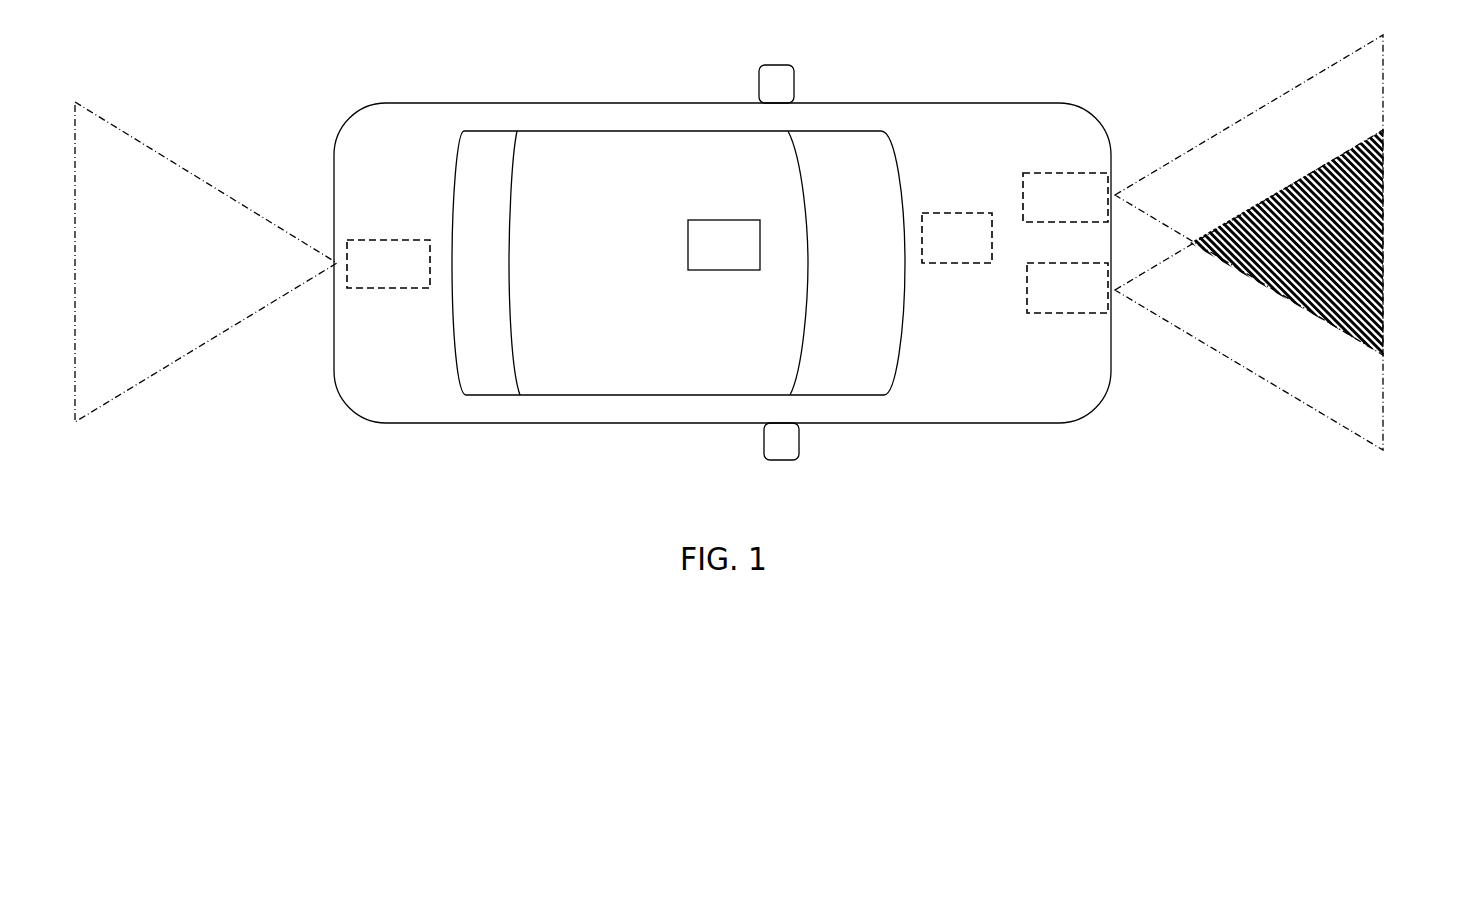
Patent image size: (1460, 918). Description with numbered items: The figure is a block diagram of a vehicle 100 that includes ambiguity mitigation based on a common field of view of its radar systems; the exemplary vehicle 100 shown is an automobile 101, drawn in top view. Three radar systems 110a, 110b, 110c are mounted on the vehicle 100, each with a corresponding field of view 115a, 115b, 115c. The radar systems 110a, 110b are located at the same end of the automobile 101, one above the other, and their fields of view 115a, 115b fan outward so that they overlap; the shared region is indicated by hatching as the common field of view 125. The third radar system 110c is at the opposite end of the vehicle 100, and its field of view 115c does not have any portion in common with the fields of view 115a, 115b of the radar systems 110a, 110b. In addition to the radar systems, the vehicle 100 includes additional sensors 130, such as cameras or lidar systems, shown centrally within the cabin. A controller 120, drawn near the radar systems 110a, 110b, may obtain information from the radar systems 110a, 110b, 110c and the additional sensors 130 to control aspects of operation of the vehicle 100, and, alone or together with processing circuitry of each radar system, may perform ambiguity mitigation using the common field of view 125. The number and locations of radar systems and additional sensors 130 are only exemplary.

The vehicle 100 is at (722, 247).
The automobile 101 is at (445, 103).
The radar system 110a is at (1037, 210).
The radar system 110b is at (1039, 301).
The radar system 110c is at (360, 277).
The field of view 115a is at (1237, 117).
The field of view 115b is at (1237, 367).
The field of view 115c is at (167, 158).
The controller 120 is at (935, 253).
The common field of view 125 is at (1327, 228).
The additional sensors 130 is at (701, 258).